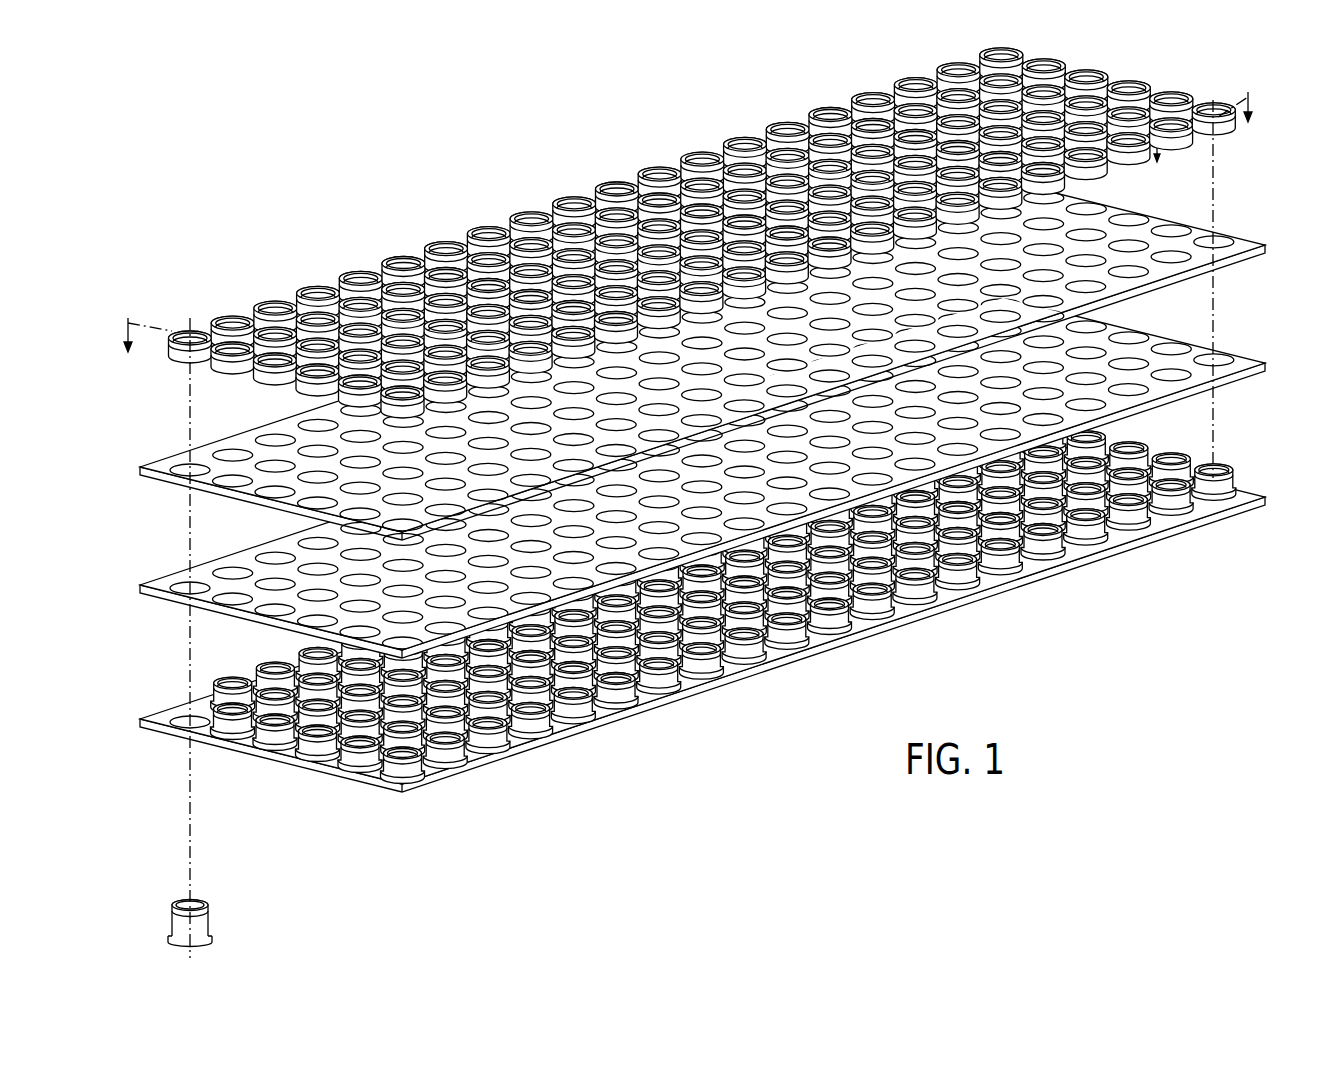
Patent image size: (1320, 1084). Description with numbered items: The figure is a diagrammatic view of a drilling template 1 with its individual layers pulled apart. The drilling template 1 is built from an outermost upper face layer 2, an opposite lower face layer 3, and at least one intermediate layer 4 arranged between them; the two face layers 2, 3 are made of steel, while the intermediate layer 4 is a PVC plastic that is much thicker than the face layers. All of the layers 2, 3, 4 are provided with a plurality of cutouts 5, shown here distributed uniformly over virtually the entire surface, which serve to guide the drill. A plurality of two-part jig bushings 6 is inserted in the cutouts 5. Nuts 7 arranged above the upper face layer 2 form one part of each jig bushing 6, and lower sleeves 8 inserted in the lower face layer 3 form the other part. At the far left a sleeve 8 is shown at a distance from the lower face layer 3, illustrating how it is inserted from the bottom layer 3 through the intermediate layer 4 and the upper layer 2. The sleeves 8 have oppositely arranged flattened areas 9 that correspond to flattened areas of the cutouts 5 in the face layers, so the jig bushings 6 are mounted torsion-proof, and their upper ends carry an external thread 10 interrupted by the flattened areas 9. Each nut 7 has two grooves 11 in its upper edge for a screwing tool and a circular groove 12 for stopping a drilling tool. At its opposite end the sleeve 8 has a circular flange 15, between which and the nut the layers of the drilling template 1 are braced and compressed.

The drilling template 1 is at (708, 503).
The upper face layer 2 is at (1235, 260).
The lower face layer 3 is at (1168, 536).
The intermediate layer 4 is at (1240, 378).
The cutouts 5 is at (192, 464).
The jig bushings 6 is at (1224, 469).
The nuts 7 is at (200, 338).
The sleeves 8 is at (271, 746).
The flattened areas 9 is at (625, 703).
The external thread 10 is at (258, 682).
The grooves 11 is at (372, 275).
The circular groove 12 is at (192, 355).
The flange 15 is at (212, 941).